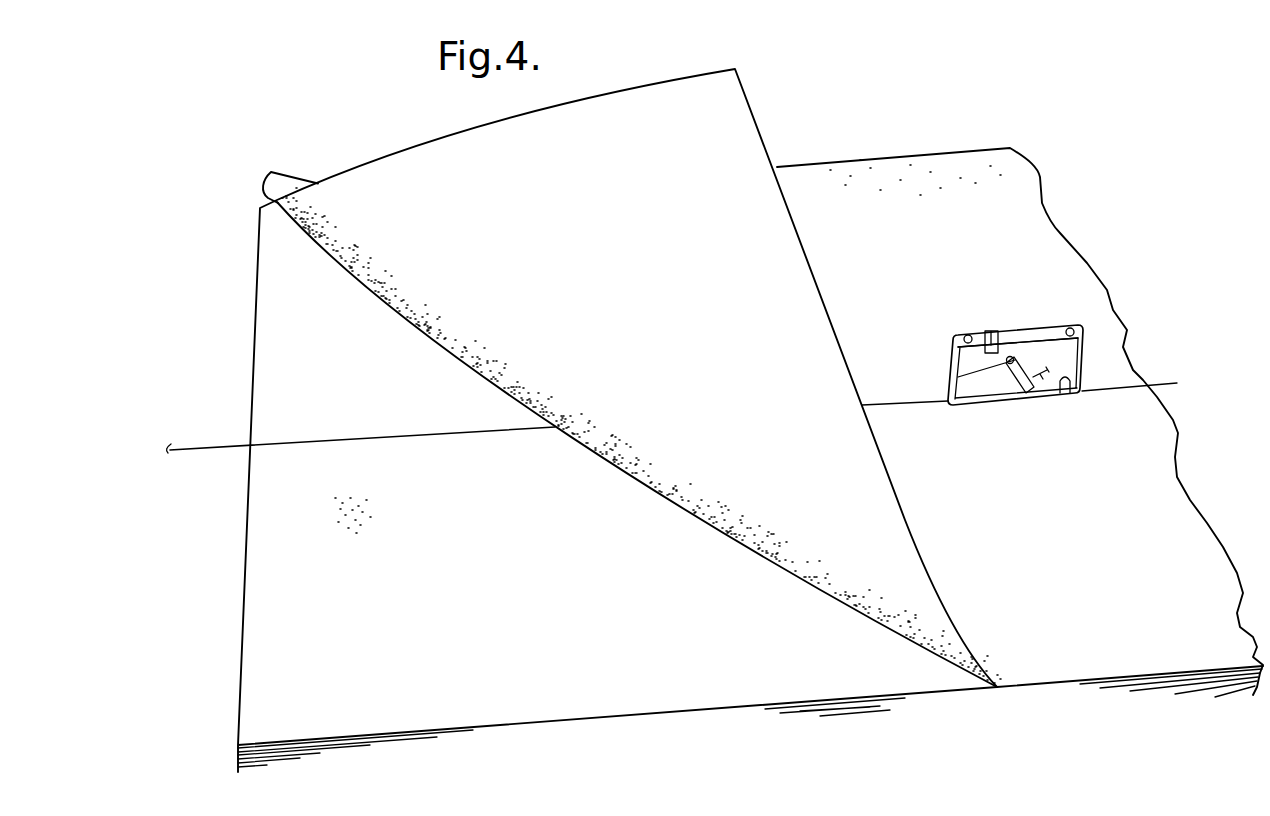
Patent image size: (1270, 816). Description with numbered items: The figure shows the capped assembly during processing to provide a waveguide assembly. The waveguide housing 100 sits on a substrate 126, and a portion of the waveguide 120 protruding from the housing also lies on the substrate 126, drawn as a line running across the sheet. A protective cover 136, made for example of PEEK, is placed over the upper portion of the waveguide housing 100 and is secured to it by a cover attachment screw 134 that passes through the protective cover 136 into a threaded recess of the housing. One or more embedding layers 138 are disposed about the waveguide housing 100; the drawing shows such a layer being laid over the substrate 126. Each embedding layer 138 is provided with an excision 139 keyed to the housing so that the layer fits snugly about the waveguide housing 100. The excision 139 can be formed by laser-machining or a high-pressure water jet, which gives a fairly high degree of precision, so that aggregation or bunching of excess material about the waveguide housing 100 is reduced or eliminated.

The waveguide housing 100 is at (1036, 375).
The waveguide 120 is at (347, 438).
The substrate 126 is at (495, 607).
The cover attachment screw 134 is at (992, 333).
The protective cover 136 is at (1037, 337).
The embedding layer 138 is at (1117, 598).
The excision 139 is at (1070, 393).